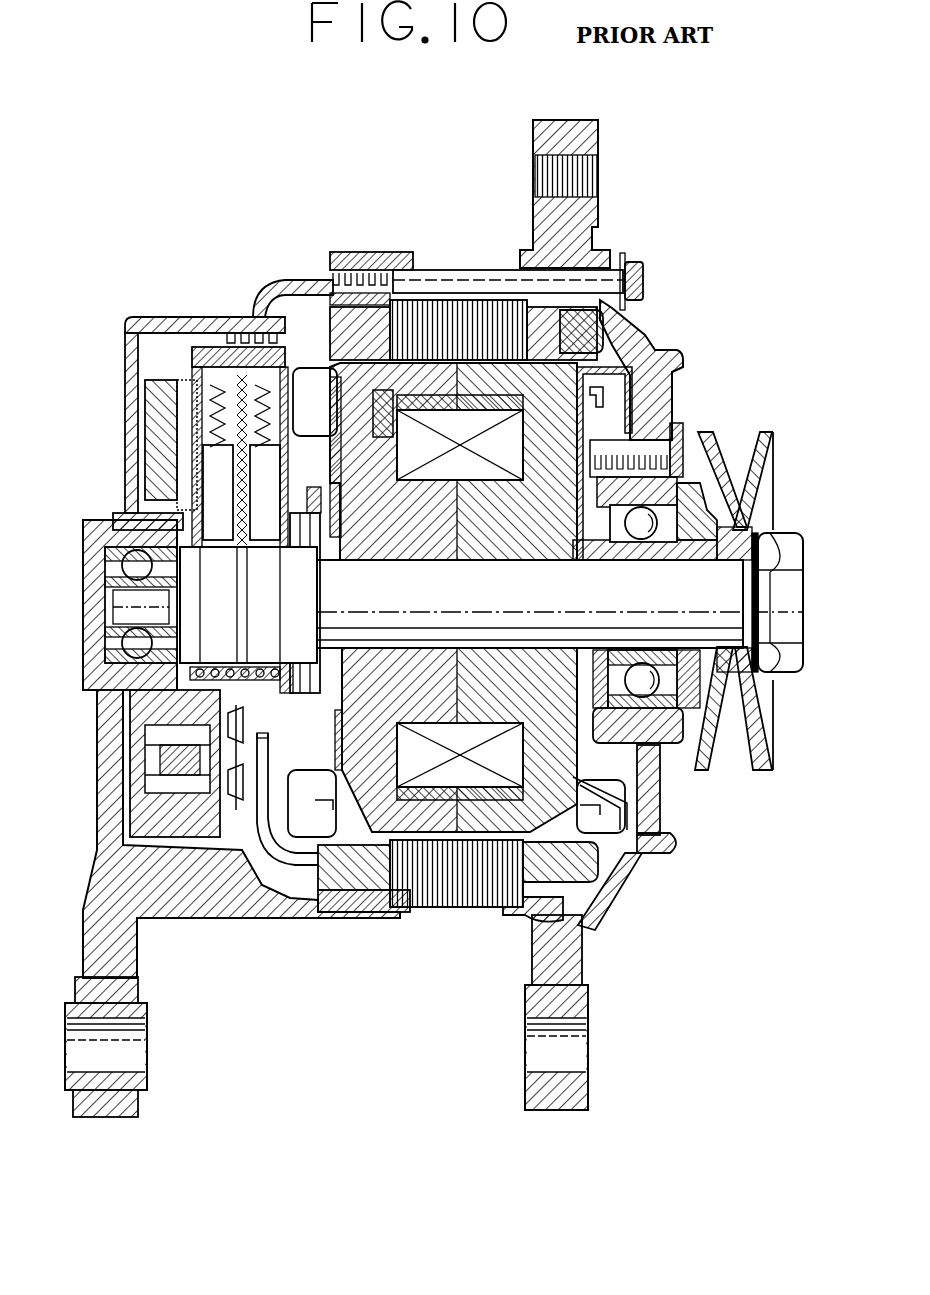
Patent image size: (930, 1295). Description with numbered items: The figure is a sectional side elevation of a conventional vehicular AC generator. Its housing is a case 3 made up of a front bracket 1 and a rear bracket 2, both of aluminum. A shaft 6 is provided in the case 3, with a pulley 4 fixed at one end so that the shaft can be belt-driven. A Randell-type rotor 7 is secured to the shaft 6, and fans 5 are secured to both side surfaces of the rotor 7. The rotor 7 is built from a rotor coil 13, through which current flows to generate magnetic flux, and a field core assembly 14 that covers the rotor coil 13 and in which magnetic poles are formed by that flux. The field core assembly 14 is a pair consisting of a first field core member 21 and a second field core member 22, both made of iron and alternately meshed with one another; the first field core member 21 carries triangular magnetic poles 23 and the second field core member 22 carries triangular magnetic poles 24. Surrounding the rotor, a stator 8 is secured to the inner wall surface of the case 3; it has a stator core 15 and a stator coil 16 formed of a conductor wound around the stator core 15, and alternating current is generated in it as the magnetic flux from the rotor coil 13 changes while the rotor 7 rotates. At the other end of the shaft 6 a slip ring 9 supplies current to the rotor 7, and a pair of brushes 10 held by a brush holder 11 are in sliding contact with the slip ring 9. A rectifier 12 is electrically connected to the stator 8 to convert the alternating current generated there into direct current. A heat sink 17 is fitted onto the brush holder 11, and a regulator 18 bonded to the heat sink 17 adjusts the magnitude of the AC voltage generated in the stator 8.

The front bracket 1 is at (647, 877).
The rear bracket 2 is at (197, 918).
The case 3 is at (280, 275).
The pulley 4 is at (775, 432).
The fans 5 is at (627, 857).
The shaft 6 is at (660, 760).
The Randell-type rotor 7 is at (633, 337).
The stator 8 is at (425, 910).
The slip ring 9 is at (215, 630).
The brushes 10 is at (215, 478).
The brush holder 11 is at (180, 505).
The rectifier 12 is at (180, 764).
The rotor coil 13 is at (390, 912).
The field core assembly 14 is at (475, 900).
The stator core 15 is at (452, 310).
The stator coil 16 is at (595, 300).
The heat sink 17 is at (150, 400).
The regulator 18 is at (190, 375).
The first field core member 21 is at (605, 900).
The second field core member 22 is at (275, 880).
The triangular magnetic poles 23 is at (492, 385).
The triangular magnetic poles 24 is at (440, 400).